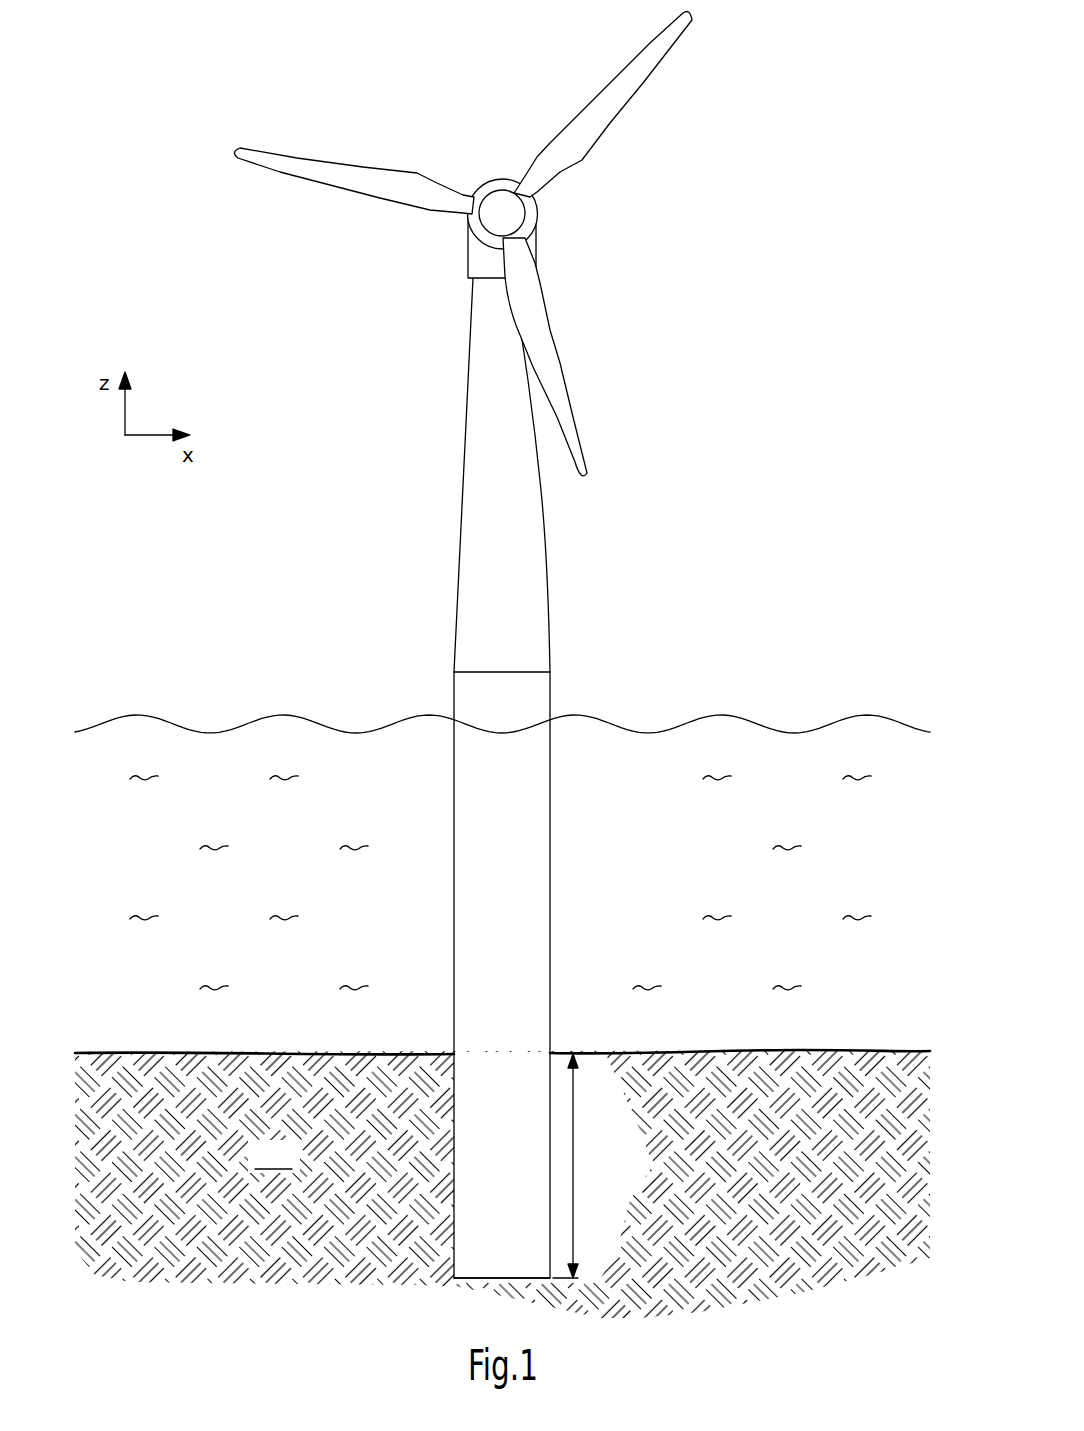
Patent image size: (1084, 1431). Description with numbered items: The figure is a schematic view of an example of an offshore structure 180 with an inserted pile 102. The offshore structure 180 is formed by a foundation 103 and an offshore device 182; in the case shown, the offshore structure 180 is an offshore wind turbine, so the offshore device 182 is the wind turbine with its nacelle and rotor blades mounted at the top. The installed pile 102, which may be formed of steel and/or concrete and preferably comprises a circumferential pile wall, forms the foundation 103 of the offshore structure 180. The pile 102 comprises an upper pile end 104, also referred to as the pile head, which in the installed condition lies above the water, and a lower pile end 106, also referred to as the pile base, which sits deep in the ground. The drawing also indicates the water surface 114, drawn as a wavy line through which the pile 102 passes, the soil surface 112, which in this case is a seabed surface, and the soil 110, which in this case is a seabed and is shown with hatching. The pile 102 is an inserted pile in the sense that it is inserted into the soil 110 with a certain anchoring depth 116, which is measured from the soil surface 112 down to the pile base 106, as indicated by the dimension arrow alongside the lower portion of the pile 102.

The offshore structure 180 is at (860, 103).
The offshore device 182 is at (668, 276).
The pile 102 is at (453, 928).
The foundation 103 is at (600, 862).
The upper pile end 104 is at (444, 669).
The lower pile end 106 is at (444, 1283).
The soil 110 is at (292, 1169).
The soil surface 112 is at (697, 1052).
The water surface 114 is at (713, 717).
The anchoring depth 116 is at (573, 1167).